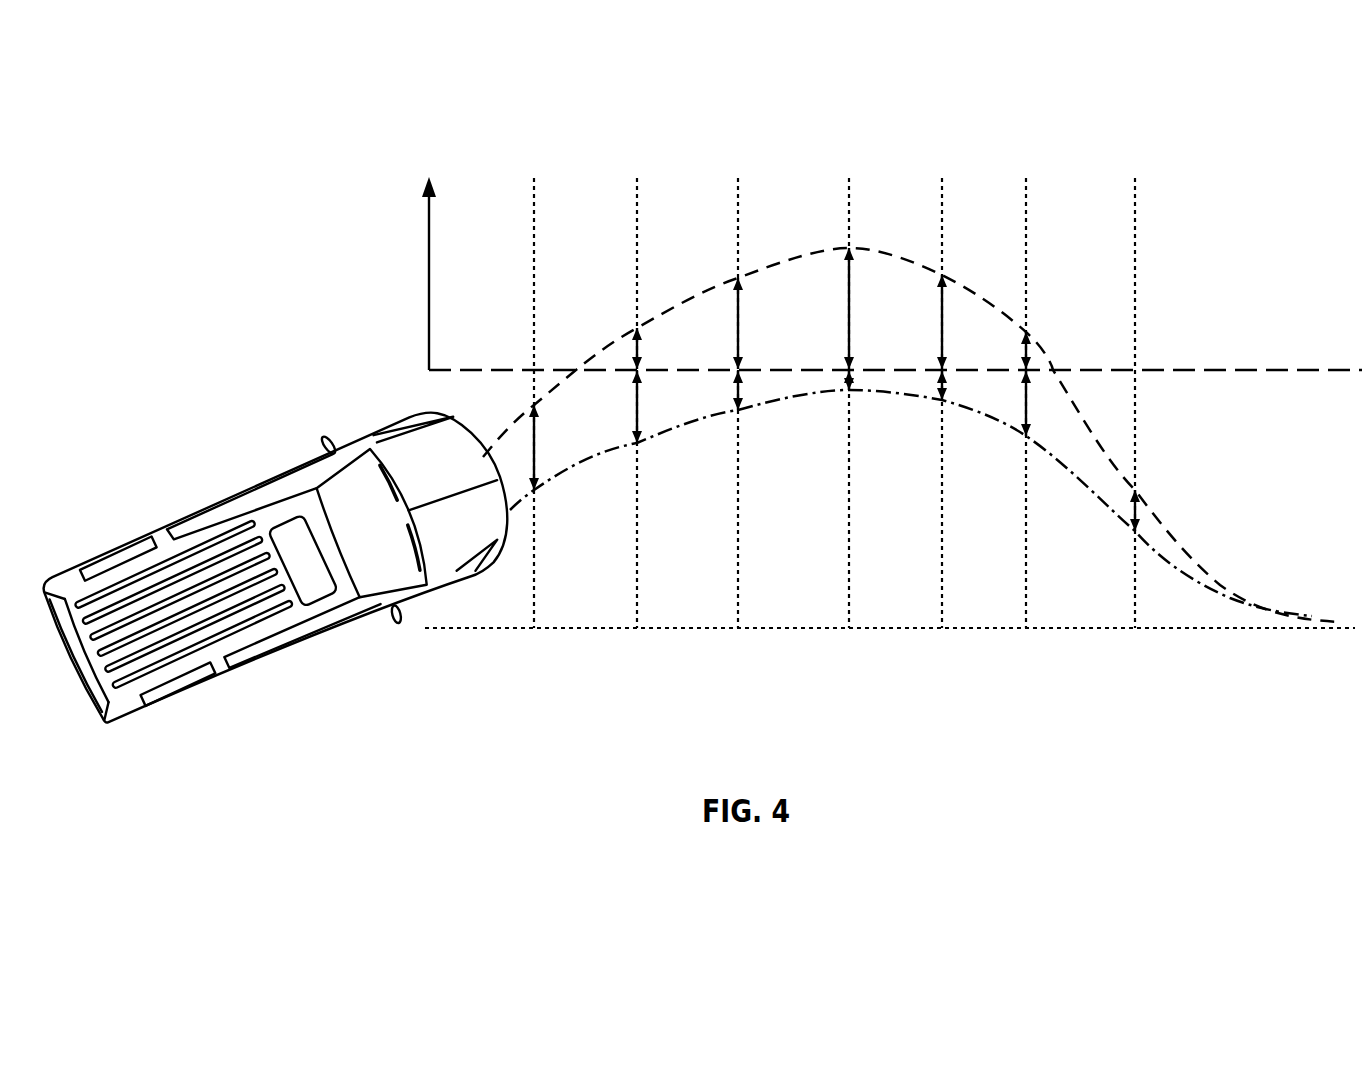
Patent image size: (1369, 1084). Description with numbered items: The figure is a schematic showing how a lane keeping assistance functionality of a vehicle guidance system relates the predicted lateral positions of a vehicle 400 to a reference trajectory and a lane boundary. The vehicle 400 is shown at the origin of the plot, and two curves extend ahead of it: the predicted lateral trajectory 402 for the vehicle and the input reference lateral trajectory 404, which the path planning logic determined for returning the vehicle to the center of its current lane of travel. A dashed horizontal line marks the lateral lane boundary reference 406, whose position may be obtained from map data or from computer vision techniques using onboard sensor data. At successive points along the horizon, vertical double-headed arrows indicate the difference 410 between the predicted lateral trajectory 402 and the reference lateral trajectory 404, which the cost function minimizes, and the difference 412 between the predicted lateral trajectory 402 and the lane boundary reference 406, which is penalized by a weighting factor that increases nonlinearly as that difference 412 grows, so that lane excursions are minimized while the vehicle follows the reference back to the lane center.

The vehicle 400 is at (268, 660).
The predicted lateral trajectory 402 is at (1176, 536).
The reference lateral trajectory 404 is at (1192, 573).
The lane boundary reference 406 is at (1273, 366).
The difference 410 is at (535, 456).
The difference 412 is at (634, 347).